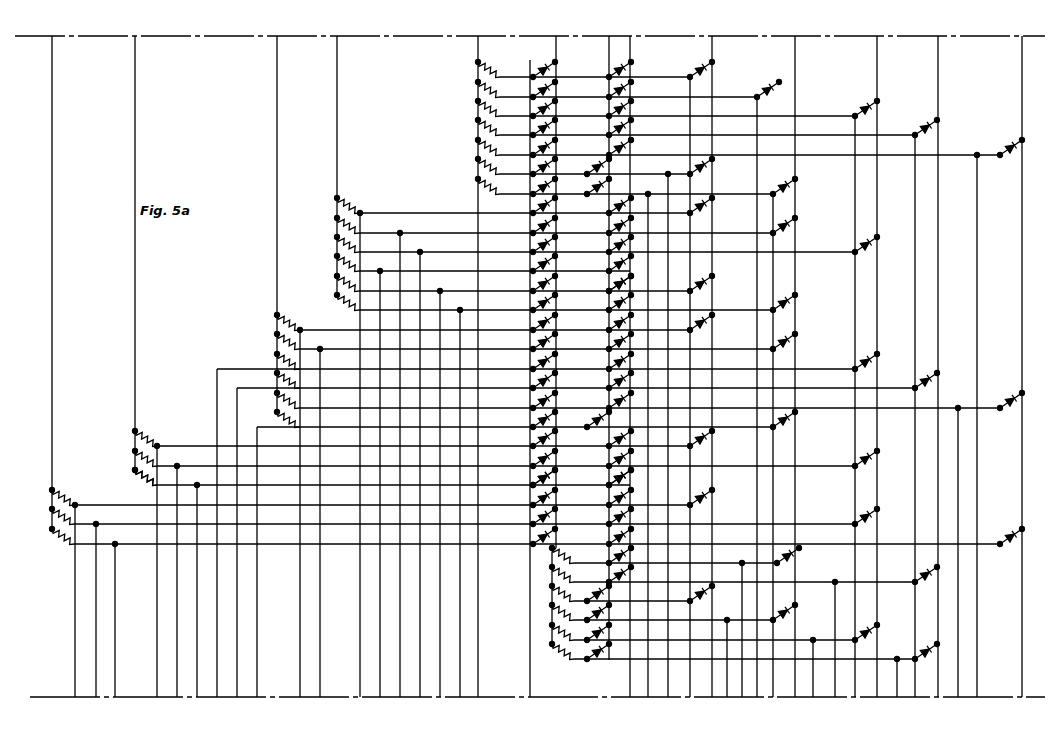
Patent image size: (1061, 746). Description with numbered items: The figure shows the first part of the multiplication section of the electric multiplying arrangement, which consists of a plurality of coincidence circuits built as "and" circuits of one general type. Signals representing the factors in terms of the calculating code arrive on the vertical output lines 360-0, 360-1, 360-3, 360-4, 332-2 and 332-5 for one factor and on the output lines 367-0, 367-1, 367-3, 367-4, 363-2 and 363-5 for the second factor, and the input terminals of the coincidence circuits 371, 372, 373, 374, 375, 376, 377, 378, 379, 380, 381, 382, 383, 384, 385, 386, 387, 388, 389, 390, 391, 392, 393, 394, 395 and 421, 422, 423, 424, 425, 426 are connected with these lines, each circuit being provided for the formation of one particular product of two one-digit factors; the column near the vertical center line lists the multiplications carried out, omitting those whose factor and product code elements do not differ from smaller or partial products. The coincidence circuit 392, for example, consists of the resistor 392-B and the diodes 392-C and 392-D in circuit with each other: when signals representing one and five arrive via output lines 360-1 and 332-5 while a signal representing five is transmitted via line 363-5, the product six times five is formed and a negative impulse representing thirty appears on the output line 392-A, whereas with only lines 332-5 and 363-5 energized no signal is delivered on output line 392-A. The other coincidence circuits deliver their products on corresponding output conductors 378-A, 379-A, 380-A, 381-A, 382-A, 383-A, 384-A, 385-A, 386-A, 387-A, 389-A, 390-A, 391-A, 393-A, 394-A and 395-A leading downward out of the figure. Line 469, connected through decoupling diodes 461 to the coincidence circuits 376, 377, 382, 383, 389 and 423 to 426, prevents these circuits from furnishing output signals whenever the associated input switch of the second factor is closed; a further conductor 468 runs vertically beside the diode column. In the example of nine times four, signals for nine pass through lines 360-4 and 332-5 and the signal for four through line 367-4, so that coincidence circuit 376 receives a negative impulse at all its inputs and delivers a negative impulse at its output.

The output line 360-0 is at (52, 63).
The output line 360-1 is at (135, 63).
The output line 332-2 is at (277, 63).
The output line 360-3 is at (337, 63).
The output line 360-4 is at (500, 366).
The output line 332-5 is at (576, 292).
The line 469 is at (616, 348).
The output line 363-5 is at (630, 60).
The output line 367-4 is at (734, 366).
The output line 367-3 is at (795, 66).
The output line 363-2 is at (877, 66).
The output line 367-1 is at (938, 66).
The output line 367-0 is at (1022, 78).
The conductor 468 is at (530, 608).
The decoupling diodes 461 is at (618, 294).
The coincidence circuit 371 is at (494, 78).
The coincidence circuit 372 is at (494, 98).
The coincidence circuit 373 is at (494, 117).
The coincidence circuit 374 is at (494, 136).
The coincidence circuit 375 is at (494, 156).
The coincidence circuit 376 is at (494, 175).
The coincidence circuit 377 is at (494, 195).
The coincidence circuit 378 is at (494, 214).
The coincidence circuit 379 is at (494, 234).
The coincidence circuit 380 is at (494, 253).
The coincidence circuit 381 is at (494, 272).
The coincidence circuit 382 is at (494, 292).
The coincidence circuit 383 is at (494, 311).
The coincidence circuit 384 is at (494, 331).
The coincidence circuit 385 is at (494, 350).
The coincidence circuit 386 is at (494, 370).
The coincidence circuit 387 is at (494, 389).
The coincidence circuit 388 is at (494, 409).
The coincidence circuit 389 is at (494, 428).
The coincidence circuit 390 is at (494, 447).
The coincidence circuit 391 is at (494, 467).
The coincidence circuit 392 is at (329, 477).
The coincidence circuit 393 is at (494, 506).
The coincidence circuit 394 is at (494, 525).
The coincidence circuit 395 is at (494, 545).
The coincidence circuit 421 is at (634, 564).
The coincidence circuit 422 is at (634, 583).
The coincidence circuit 423 is at (634, 602).
The coincidence circuit 424 is at (634, 621).
The coincidence circuit 425 is at (634, 641).
The coincidence circuit 426 is at (634, 660).
The output conductor 378-A is at (354, 454).
The output conductor 379-A is at (394, 464).
The output conductor 380-A is at (414, 474).
The output conductor 381-A is at (374, 483).
The output conductor 382-A is at (434, 493).
The output conductor 383-A is at (454, 503).
The output conductor 384-A is at (294, 513).
The output conductor 385-A is at (314, 522).
The output conductor 386-A is at (211, 533).
The output conductor 387-A is at (231, 542).
The output conductor 389-A is at (251, 562).
The output conductor 390-A is at (151, 571).
The output conductor 391-A is at (171, 581).
The output line 392-A is at (191, 590).
The output conductor 393-A is at (69, 600).
The output conductor 394-A is at (90, 610).
The output conductor 395-A is at (109, 620).
The resistor 392-B is at (135, 481).
The diode 392-C is at (533, 483).
The diode 392-D is at (630, 477).